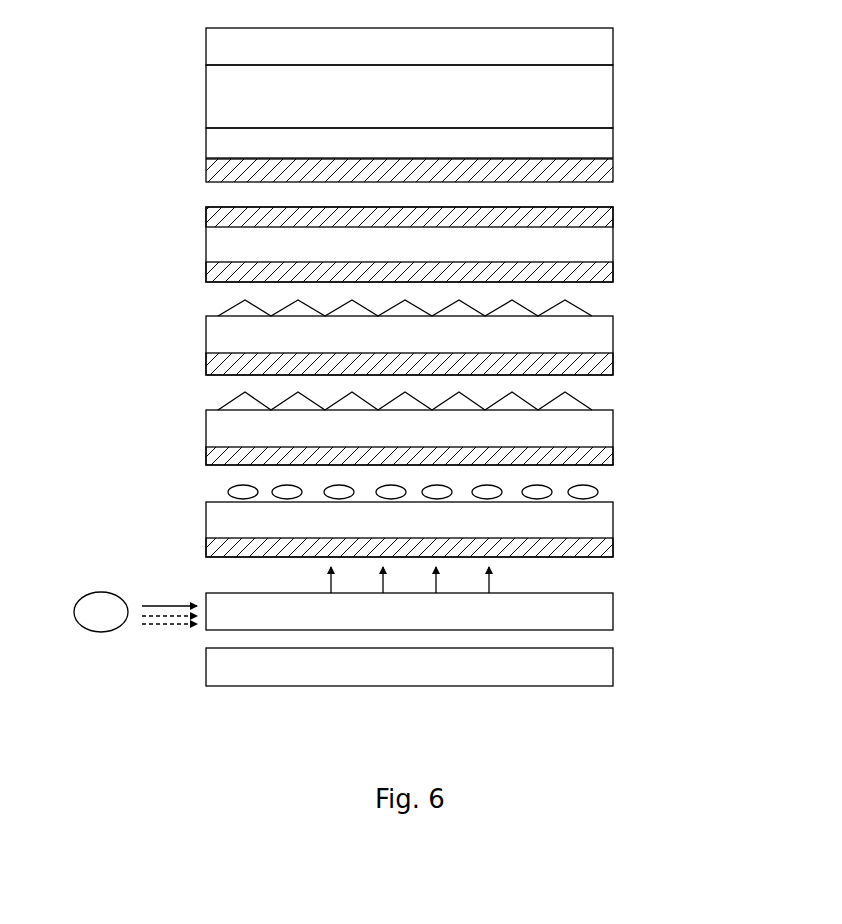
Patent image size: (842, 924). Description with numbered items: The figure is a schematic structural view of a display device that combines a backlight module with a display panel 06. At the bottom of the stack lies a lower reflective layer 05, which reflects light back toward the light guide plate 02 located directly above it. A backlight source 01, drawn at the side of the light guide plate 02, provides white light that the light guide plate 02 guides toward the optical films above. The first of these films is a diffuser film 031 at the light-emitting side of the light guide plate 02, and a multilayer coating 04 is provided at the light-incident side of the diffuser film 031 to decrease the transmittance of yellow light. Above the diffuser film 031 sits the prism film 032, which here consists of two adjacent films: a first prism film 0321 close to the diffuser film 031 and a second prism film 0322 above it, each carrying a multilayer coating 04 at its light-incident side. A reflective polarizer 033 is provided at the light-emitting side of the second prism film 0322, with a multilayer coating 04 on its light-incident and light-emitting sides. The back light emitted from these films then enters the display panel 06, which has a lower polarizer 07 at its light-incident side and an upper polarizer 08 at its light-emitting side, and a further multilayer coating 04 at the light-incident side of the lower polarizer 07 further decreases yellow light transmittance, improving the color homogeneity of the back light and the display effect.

The backlight source 01 is at (83, 596).
The light guide plate 02 is at (615, 618).
The multilayer coating 04 is at (615, 557).
The lower reflective layer 05 is at (615, 665).
The display panel 06 is at (615, 90).
The lower polarizer 07 is at (615, 145).
The upper polarizer 08 is at (615, 38).
The diffuser film 031 is at (615, 517).
The prism film 032 is at (405, 395).
The first prism film 0321 is at (615, 428).
The second prism film 0322 is at (615, 335).
The reflective polarizer 033 is at (615, 238).